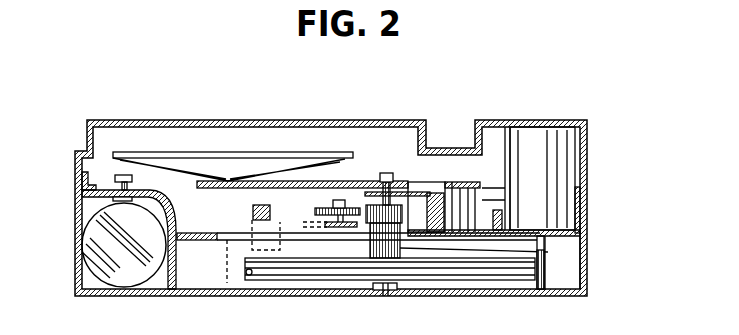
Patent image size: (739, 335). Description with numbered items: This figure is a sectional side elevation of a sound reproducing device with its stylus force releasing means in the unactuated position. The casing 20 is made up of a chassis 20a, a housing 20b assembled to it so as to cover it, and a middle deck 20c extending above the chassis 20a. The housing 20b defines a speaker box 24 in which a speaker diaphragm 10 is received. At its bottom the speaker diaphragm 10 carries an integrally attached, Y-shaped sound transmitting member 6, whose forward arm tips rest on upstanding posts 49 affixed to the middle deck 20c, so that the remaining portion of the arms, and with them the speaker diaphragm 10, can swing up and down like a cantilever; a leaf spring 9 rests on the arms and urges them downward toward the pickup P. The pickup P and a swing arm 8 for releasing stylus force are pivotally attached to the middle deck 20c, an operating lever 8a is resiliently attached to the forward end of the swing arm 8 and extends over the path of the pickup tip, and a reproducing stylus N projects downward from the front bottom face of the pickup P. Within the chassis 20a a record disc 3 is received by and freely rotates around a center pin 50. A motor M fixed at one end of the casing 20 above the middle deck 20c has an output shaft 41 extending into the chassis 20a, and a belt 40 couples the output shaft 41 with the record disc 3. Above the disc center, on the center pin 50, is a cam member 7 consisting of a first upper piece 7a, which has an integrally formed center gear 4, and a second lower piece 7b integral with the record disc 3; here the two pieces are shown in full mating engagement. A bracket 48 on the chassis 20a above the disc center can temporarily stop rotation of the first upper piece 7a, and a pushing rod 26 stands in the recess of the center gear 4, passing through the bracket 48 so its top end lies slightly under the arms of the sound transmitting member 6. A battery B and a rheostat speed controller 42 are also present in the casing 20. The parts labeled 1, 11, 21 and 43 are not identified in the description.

The speaker box 24 is at (134, 136).
The speaker diaphragm 10 is at (194, 152).
The operating lever 8a is at (306, 186).
The drive unit 1 is at (322, 205).
The sound transmitting member 6 is at (332, 181).
The leaf spring 9 is at (389, 172).
The pushing rod 26 is at (400, 190).
The center gear 4 is at (431, 182).
The bracket 48 is at (447, 195).
The upstanding posts 49 is at (488, 208).
The motor M is at (566, 146).
The housing 20b is at (588, 174).
The middle deck 20c is at (503, 196).
The casing 20 is at (588, 220).
The chassis 20a is at (588, 272).
The speed controller 42 is at (116, 176).
The battery compartment 43 is at (90, 207).
The optical axis 11 is at (378, 158).
The pickup P is at (253, 210).
The reproducing stylus N is at (308, 211).
The cam member 7 is at (566, 265).
The battery B is at (121, 278).
The base plate 21 is at (227, 284).
The record disc 3 is at (284, 272).
The swing arm 8 is at (340, 222).
The first upper piece 7a is at (383, 236).
The center pin 50 is at (389, 293).
The second lower piece 7b is at (440, 292).
The belt 40 is at (527, 292).
The output shaft 41 is at (555, 292).